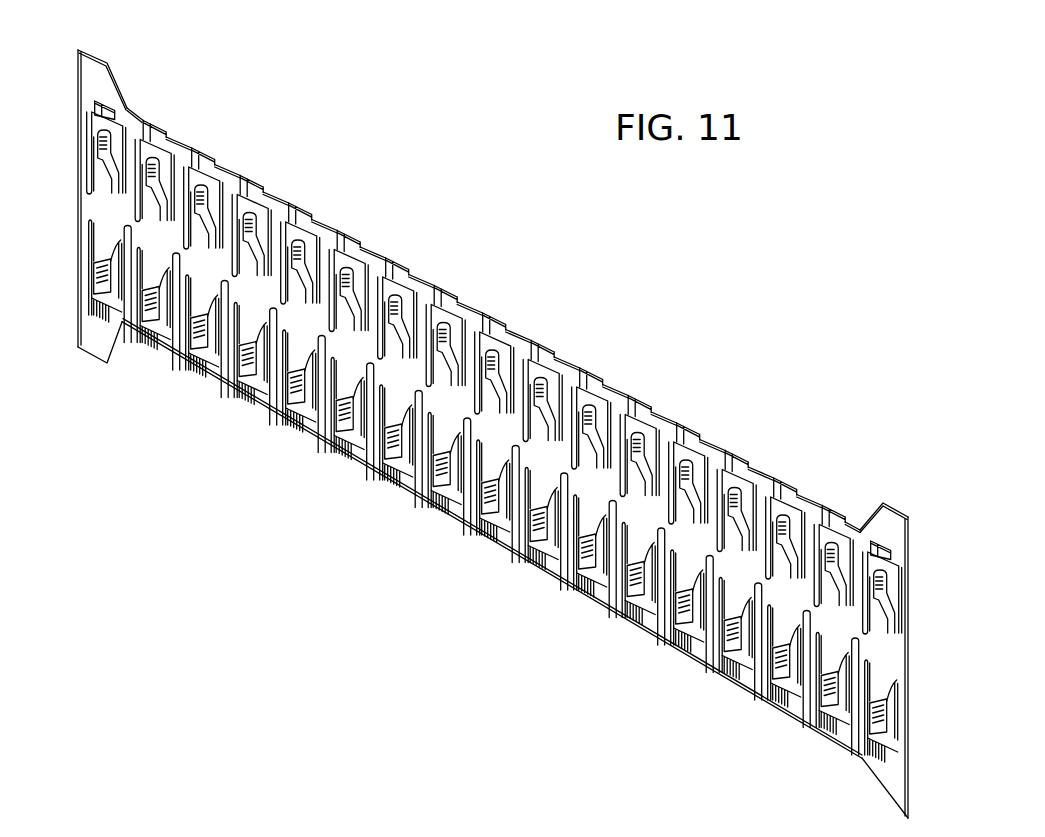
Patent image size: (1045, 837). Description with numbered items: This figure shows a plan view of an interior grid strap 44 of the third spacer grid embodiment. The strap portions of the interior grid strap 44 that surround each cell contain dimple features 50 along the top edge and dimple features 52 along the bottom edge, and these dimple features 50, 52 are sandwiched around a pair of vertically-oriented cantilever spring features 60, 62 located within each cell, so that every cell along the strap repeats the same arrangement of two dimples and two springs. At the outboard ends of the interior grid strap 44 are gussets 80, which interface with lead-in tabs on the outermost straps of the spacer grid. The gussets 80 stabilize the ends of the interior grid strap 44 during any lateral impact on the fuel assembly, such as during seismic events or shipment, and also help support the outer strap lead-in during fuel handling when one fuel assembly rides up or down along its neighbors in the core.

The interior grid strap 44 is at (268, 458).
The dimple feature 50 is at (495, 317).
The dimple feature 52 is at (542, 563).
The cantilever spring feature 60 is at (733, 492).
The cantilever spring feature 62 is at (683, 617).
The gusset 80 is at (95, 78).